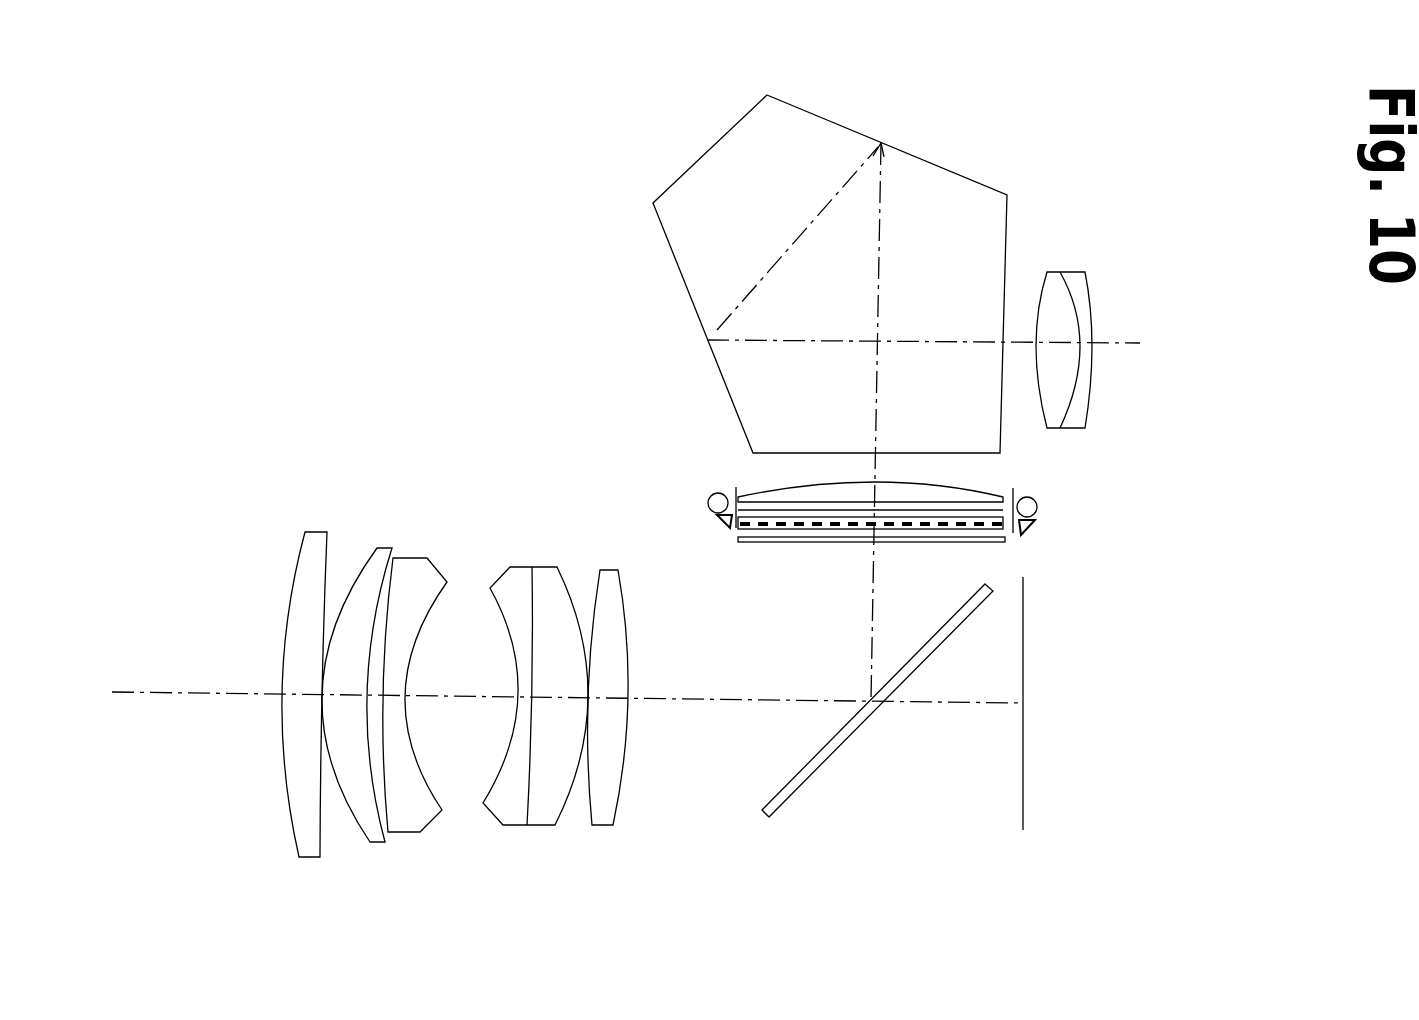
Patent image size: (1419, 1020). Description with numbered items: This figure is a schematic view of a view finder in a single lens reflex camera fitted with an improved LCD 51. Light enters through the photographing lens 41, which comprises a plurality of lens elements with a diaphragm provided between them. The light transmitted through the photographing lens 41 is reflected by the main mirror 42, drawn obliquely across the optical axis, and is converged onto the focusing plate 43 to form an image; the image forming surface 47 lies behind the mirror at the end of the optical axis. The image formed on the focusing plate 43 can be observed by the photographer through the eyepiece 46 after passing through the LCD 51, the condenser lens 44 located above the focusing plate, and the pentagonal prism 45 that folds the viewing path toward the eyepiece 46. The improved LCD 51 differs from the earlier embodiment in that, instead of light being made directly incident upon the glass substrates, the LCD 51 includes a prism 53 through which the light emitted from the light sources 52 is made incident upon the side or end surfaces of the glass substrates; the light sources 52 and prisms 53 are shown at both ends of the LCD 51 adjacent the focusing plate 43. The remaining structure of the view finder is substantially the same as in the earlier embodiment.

The photographing lens 41 is at (454, 541).
The main mirror 42 is at (822, 763).
The focusing plate 43 is at (783, 540).
The condenser lens 44 is at (773, 493).
The pentagonal prism 45 is at (830, 120).
The eyepiece 46 is at (1090, 283).
The image forming surface 47 is at (1023, 738).
The LCD 51 is at (1013, 540).
The light sources 52 is at (712, 494).
The prism 53 is at (718, 520).